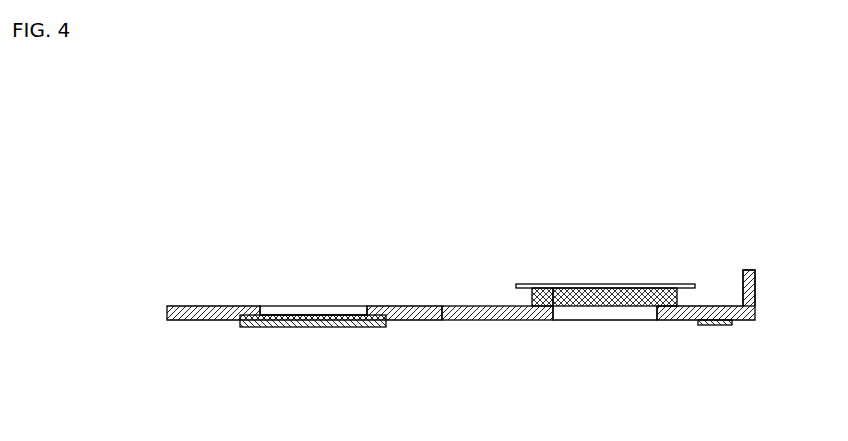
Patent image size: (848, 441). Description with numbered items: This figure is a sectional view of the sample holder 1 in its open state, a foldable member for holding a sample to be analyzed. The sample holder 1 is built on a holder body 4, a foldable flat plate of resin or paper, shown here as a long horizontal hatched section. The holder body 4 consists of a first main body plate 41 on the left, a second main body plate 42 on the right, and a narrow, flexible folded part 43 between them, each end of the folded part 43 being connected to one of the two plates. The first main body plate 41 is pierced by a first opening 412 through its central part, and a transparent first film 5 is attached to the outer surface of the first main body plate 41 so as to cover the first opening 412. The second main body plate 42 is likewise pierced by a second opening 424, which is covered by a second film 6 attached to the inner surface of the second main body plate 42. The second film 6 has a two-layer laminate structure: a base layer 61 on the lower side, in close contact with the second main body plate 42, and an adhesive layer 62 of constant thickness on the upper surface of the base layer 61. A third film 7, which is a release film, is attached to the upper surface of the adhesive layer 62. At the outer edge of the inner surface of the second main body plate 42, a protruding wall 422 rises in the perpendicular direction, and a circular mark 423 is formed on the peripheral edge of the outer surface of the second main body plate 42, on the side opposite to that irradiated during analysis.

The sample holder 1 is at (507, 210).
The holder body 4 is at (192, 305).
The first main body plate 41 is at (200, 320).
The first opening 412 is at (357, 306).
The folded part 43 is at (453, 320).
The second opening 424 is at (560, 320).
The second main body plate 42 is at (665, 320).
The protruding wall 422 is at (757, 291).
The mark 423 is at (722, 326).
The first film 5 is at (355, 328).
The second film 6 is at (627, 306).
The base layer 61 is at (533, 302).
The adhesive layer 62 is at (681, 295).
The third film 7 is at (540, 285).